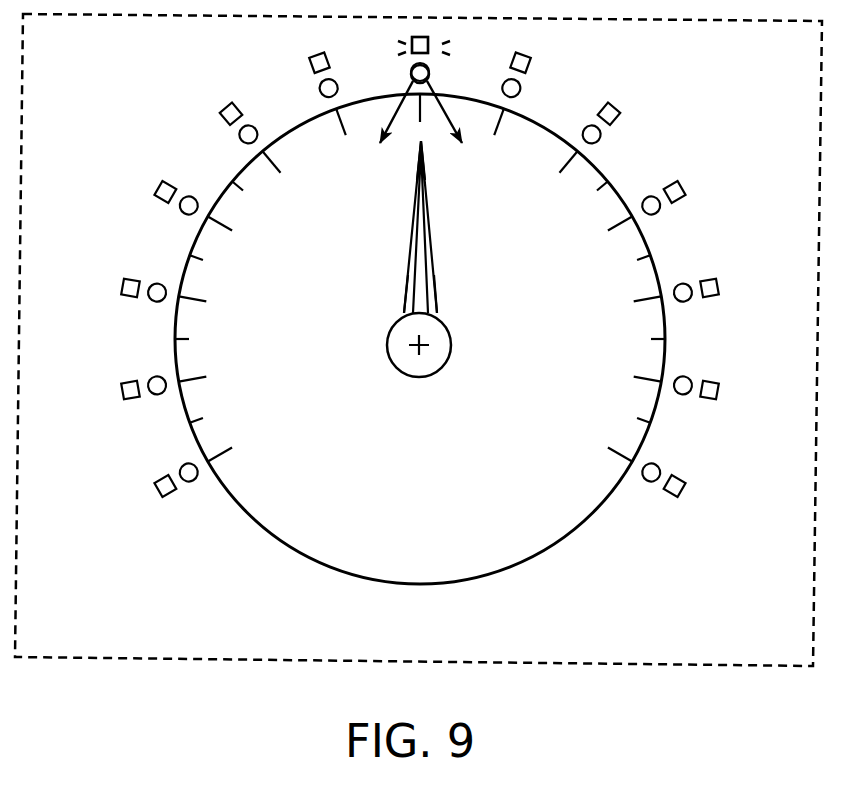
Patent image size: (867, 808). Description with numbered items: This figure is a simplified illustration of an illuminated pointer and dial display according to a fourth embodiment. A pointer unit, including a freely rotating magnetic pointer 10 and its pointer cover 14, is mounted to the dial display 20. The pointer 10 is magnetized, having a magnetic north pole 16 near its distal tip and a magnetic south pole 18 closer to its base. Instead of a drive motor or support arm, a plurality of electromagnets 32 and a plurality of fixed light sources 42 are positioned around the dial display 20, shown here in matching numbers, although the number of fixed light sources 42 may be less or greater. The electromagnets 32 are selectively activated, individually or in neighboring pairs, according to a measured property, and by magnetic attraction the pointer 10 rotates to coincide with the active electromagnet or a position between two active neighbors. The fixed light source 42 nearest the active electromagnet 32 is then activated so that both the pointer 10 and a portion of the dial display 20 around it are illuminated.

The pointer 10 is at (405, 257).
The pointer cover 14 is at (392, 375).
The magnetic north pole 16 is at (428, 163).
The magnetic south pole 18 is at (440, 309).
The dial display 20 is at (320, 482).
The electromagnets 32 is at (145, 481).
The fixed light sources 42 is at (178, 216).